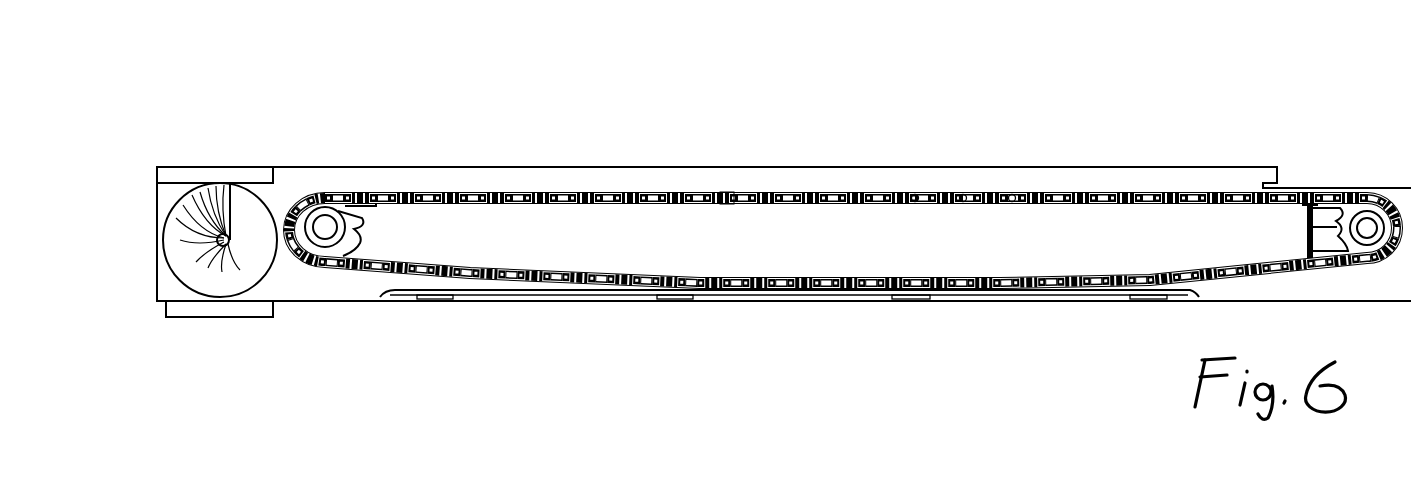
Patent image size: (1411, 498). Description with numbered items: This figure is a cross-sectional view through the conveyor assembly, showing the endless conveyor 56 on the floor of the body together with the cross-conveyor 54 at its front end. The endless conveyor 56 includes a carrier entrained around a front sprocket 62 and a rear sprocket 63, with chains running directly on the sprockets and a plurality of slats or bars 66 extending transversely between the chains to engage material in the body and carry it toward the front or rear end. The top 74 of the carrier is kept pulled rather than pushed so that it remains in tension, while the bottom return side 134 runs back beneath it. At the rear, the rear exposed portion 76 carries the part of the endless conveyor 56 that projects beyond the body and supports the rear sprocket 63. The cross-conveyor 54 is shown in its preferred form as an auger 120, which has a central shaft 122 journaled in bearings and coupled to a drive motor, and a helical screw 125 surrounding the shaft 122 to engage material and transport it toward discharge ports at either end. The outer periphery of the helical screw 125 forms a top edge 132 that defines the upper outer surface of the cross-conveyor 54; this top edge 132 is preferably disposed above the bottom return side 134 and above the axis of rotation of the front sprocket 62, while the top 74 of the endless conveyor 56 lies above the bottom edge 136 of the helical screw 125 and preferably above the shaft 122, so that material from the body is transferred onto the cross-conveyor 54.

The cross-conveyor 54 is at (176, 180).
The auger 120 is at (282, 197).
The top edge 132 is at (227, 183).
The helical screw 125 is at (256, 201).
The front sprocket 62 is at (348, 216).
The endless conveyor 56 is at (640, 194).
The top 74 is at (727, 192).
The slats or bars 66 is at (915, 192).
The rear sprocket 63 is at (1310, 224).
The rear exposed portion 76 is at (1364, 189).
The central shaft 122 is at (226, 240).
The bottom edge 136 is at (220, 298).
The bottom return side 134 is at (548, 283).